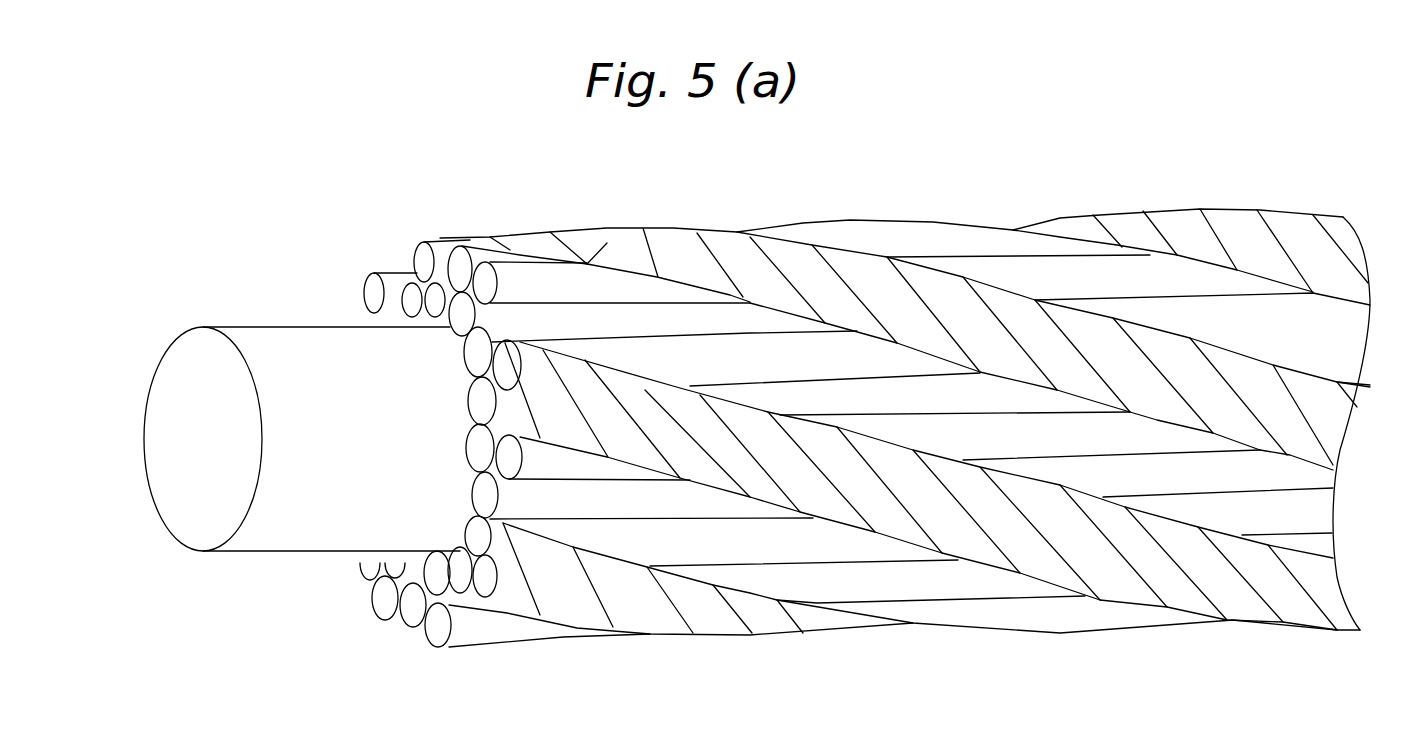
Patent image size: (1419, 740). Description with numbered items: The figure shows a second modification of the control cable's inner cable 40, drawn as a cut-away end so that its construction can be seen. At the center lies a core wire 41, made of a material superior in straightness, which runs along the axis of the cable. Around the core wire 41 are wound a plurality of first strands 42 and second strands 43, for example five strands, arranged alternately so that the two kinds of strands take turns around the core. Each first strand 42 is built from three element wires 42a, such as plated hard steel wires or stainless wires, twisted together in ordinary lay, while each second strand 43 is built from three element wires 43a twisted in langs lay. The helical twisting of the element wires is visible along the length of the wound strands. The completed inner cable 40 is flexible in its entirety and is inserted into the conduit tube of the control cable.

The inner cable 40 is at (902, 208).
The core wire 41 is at (287, 327).
The first strands 42 is at (589, 262).
The element wires 42a is at (493, 247).
The second strands 43 is at (574, 632).
The element wires 43a is at (505, 614).